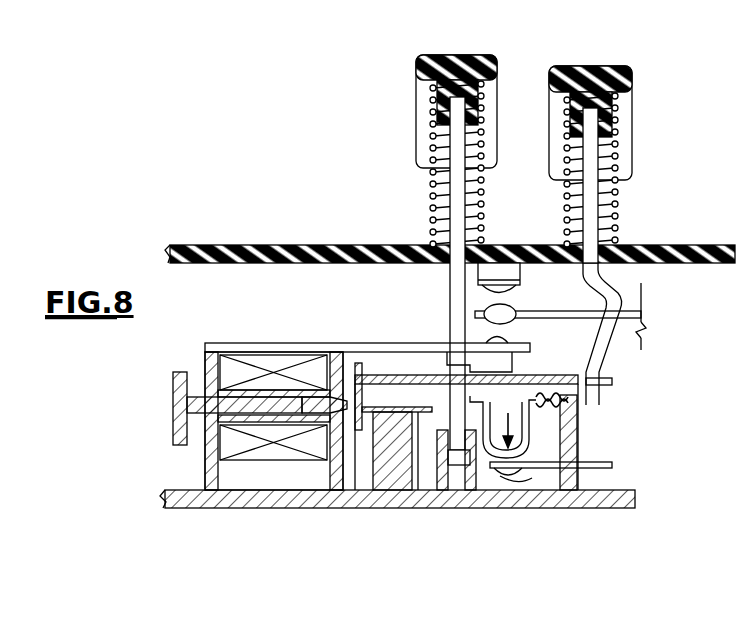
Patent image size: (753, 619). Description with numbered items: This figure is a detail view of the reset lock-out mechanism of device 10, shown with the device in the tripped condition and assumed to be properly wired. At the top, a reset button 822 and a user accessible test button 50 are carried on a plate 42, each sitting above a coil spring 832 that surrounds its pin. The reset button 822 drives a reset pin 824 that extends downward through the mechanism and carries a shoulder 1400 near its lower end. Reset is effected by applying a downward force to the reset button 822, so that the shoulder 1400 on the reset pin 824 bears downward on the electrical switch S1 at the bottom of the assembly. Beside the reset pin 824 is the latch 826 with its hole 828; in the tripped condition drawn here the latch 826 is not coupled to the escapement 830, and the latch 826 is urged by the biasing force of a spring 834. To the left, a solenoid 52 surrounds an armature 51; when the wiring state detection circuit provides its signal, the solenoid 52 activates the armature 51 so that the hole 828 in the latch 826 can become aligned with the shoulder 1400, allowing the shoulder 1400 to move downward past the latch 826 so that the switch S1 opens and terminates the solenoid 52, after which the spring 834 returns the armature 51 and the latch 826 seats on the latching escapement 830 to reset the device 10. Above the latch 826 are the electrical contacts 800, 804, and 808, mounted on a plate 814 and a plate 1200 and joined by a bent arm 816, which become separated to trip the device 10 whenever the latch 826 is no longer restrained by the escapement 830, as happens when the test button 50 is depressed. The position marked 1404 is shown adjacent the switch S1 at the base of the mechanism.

The device 10 is at (328, 90).
The support plate 42 is at (504, 278).
The test button 50 is at (600, 78).
The armature 51 is at (178, 398).
The solenoid 52 is at (272, 458).
The contact 800 is at (522, 342).
The contact 804 is at (516, 320).
The contact 808 is at (516, 298).
The plate 814 is at (366, 343).
The bent arm 816 is at (612, 332).
The reset button 822 is at (428, 125).
The reset pin 824 is at (452, 290).
The latch 826 is at (438, 440).
The hole 828 is at (447, 408).
The escapement 830 is at (470, 400).
The coil spring 832 is at (436, 206).
The spring 834 is at (577, 430).
The plate 1200 is at (490, 362).
The shoulder 1400 is at (482, 472).
The switch S1 is at (530, 478).
The contact position 1404 is at (650, 528).